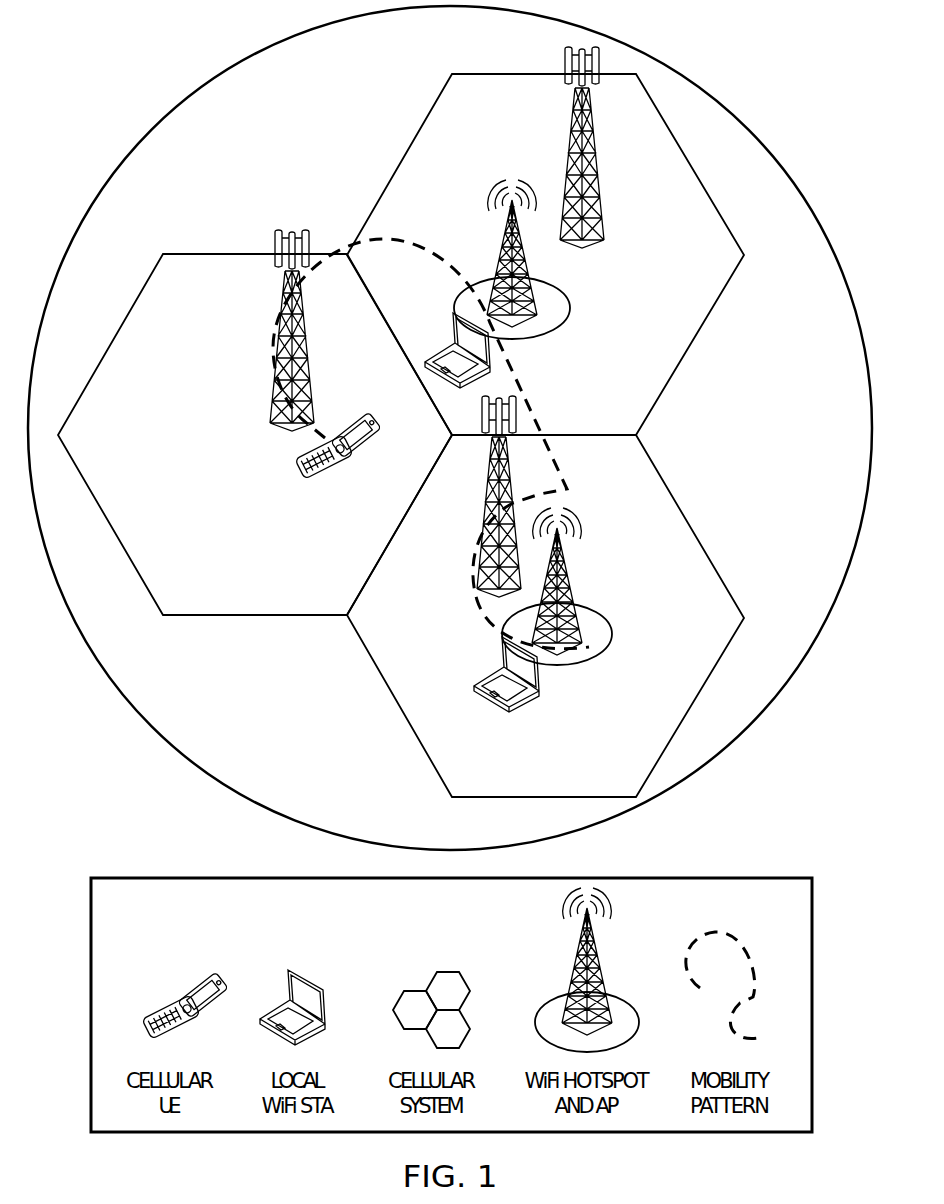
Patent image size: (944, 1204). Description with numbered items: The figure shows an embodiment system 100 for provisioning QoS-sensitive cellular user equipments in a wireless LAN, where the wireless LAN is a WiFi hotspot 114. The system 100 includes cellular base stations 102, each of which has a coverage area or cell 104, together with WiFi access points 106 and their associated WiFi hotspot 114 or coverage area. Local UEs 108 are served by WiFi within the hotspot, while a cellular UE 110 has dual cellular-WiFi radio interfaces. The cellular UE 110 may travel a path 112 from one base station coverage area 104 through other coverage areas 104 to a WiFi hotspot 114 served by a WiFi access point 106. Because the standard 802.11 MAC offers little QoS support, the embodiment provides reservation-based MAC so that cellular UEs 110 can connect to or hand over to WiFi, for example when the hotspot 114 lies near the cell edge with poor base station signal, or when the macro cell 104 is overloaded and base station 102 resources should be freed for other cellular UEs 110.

The system 100 is at (218, 58).
The cellular base station 102 is at (570, 148).
The cell 104 is at (166, 465).
The WiFi access point 106 is at (501, 244).
The local UE 108 is at (443, 352).
The cellular UE 110 is at (328, 472).
The path 112 is at (342, 246).
The WiFi hotspot 114 is at (558, 300).